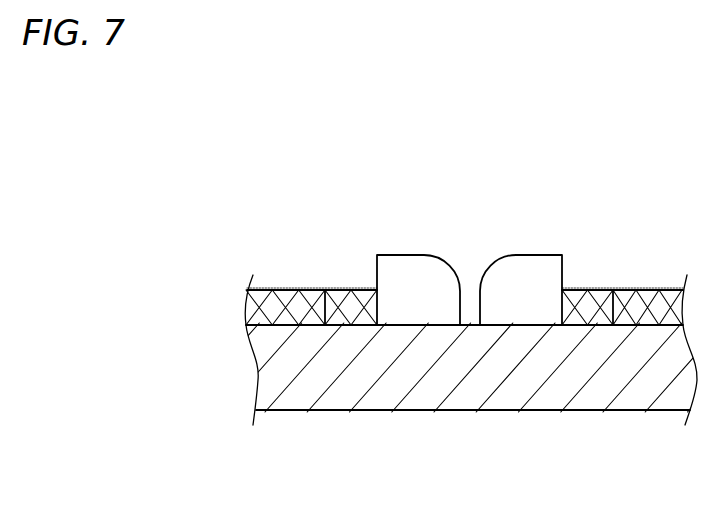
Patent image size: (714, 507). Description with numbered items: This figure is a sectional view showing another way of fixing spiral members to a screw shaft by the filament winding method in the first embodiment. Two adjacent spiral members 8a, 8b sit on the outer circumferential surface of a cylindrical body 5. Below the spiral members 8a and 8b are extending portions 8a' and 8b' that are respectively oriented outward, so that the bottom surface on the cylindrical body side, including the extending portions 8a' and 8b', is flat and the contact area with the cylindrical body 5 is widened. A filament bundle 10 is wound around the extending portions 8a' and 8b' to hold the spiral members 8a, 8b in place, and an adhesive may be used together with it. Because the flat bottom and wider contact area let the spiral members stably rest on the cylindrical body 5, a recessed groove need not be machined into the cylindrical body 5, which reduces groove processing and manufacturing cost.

The cylindrical body 5 is at (375, 395).
The spiral member 8a is at (418, 257).
The extending portion 8a' is at (351, 272).
The spiral member 8b is at (521, 257).
The extending portion 8b' is at (587, 272).
The filament bundle 10 is at (651, 290).